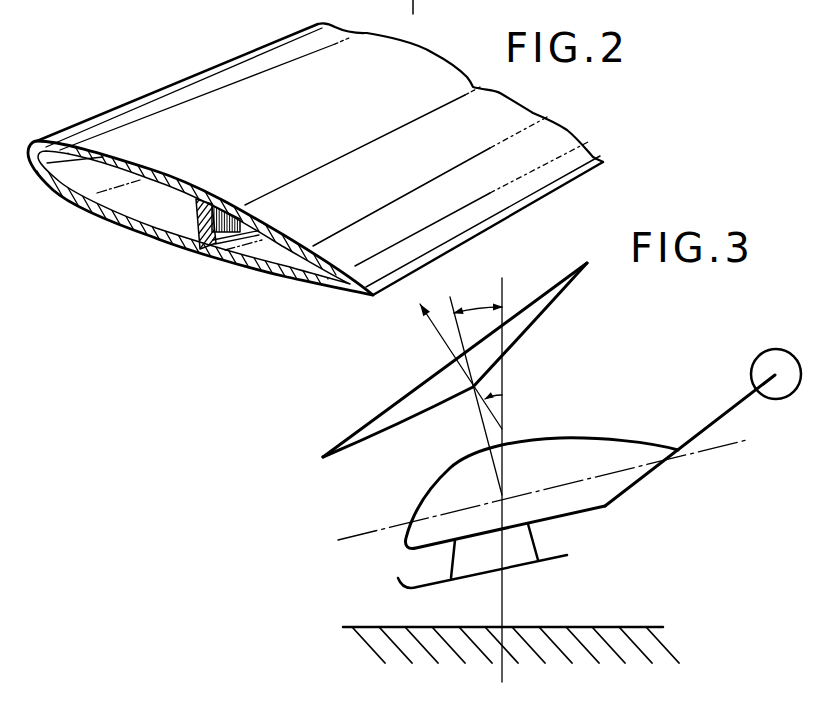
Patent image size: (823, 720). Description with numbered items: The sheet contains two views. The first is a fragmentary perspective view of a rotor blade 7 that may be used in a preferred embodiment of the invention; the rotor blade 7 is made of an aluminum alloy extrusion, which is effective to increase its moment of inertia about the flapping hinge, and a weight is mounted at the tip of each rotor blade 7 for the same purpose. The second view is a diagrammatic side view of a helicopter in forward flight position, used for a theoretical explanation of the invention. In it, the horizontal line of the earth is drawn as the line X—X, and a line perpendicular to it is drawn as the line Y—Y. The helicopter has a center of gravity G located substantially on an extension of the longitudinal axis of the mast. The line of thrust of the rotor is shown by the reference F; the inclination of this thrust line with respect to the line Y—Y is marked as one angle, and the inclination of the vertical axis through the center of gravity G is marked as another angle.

In FIG. 2, the rotor blade 7 is at (193, 92).
In FIG. 3, the line of thrust of the rotor F is at (456, 358).
In FIG. 3, the center of gravity G is at (542, 490).
In FIG. 3, the horizontal line of the earth X is at (504, 640).
In FIG. 3, the vertical line Y is at (502, 480).